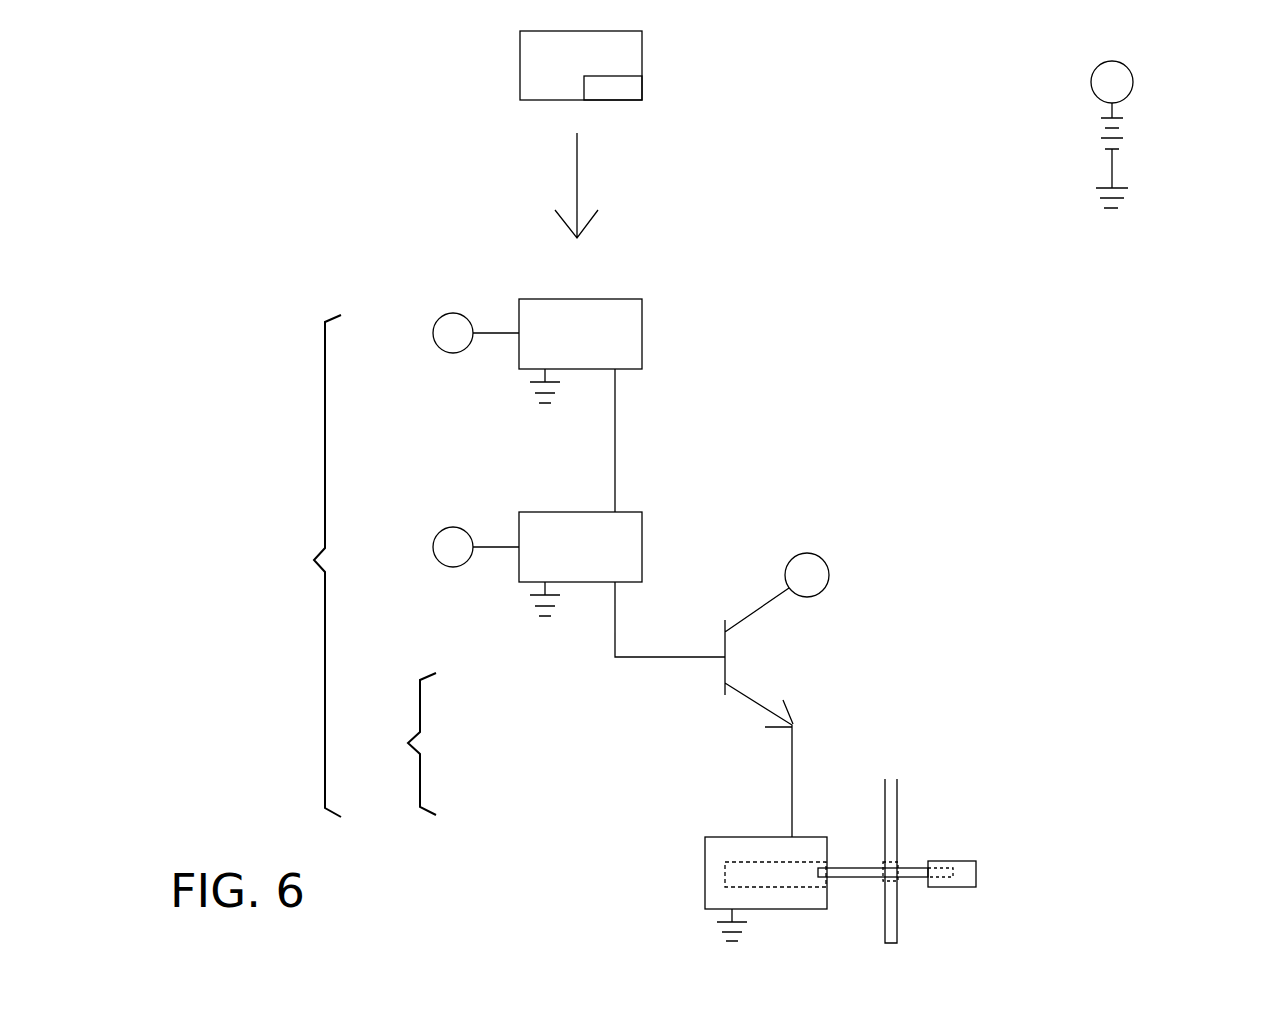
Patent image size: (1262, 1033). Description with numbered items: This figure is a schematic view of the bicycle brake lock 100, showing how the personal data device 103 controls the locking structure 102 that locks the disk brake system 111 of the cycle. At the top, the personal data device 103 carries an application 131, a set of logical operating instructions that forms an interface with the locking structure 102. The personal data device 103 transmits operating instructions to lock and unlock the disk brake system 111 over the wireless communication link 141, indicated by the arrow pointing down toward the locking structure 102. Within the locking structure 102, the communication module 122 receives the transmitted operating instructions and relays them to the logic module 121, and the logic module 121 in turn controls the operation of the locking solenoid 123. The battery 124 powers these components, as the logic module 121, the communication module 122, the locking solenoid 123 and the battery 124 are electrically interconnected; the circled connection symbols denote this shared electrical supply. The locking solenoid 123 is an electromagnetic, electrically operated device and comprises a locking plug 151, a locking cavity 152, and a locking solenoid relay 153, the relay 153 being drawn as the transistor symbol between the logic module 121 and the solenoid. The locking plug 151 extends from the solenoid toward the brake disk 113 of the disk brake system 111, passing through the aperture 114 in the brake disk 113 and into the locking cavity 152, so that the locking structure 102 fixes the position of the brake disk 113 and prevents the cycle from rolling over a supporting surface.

The bicycle brake lock 100 is at (268, 174).
The locking structure 102 is at (292, 566).
The personal data device 103 is at (642, 52).
The application 131 is at (642, 88).
The wireless communication link 141 is at (580, 182).
The communication module 122 is at (642, 335).
The logic module 121 is at (642, 548).
The battery 124 is at (1130, 136).
The locking solenoid 123 is at (416, 744).
The locking plug 151 is at (853, 878).
The locking cavity 152 is at (976, 873).
The locking solenoid relay 153 is at (717, 673).
The disk brake system 111 is at (978, 846).
The brake disk 113 is at (897, 815).
The aperture 114 is at (893, 860).